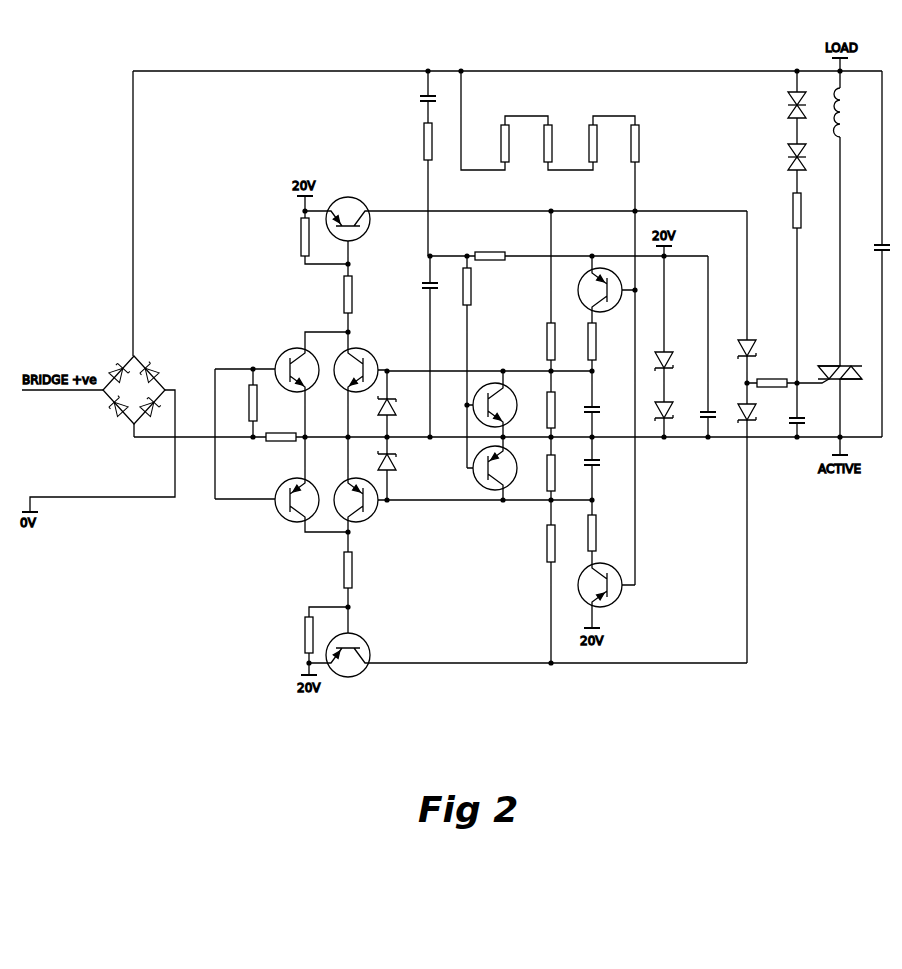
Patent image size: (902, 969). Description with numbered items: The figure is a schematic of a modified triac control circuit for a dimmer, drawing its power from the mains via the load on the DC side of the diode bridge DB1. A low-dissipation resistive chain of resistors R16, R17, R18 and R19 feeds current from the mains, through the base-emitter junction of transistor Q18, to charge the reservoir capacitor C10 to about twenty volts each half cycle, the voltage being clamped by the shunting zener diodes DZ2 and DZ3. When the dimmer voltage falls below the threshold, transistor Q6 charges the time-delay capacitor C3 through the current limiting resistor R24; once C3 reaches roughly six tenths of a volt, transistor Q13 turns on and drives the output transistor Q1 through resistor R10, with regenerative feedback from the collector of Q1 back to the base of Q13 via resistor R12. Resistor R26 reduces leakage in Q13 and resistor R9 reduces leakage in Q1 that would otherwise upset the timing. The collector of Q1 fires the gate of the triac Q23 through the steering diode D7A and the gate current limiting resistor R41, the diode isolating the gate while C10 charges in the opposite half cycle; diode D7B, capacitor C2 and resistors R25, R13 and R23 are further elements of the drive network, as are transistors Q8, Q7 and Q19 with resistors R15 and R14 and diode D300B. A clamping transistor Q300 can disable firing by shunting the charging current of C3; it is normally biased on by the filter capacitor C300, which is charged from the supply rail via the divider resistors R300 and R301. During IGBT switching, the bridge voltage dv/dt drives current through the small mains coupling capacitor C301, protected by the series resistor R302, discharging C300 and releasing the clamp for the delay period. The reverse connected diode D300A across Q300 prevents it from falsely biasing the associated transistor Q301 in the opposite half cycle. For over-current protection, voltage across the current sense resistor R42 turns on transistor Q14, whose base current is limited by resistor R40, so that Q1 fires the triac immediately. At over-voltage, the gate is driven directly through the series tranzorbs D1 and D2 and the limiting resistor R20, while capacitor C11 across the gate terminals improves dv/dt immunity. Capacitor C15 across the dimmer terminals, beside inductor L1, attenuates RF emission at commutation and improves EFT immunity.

The bridge rectifier DB1 is at (146, 390).
The resistor R40 is at (237, 403).
The current sense resistor R42 is at (281, 421).
The transistor Q14 is at (292, 363).
The transistor Q13 is at (360, 363).
The transistor Q8 is at (297, 490).
The transistor Q7 is at (356, 490).
The diode D300B is at (405, 404).
The reverse connected diode D300A is at (406, 468).
The current limiting resistor R10 is at (334, 294).
The output transistor Q1 is at (354, 221).
The resistor R9 is at (290, 237).
The mains coupling capacitor C301 is at (412, 98).
The series resistor element R302 is at (412, 141).
The resistor R19 is at (517, 143).
The resistor R18 is at (560, 143).
The resistor R16 is at (605, 143).
The resistor R17 is at (647, 143).
The filter capacitor C300 is at (418, 283).
The resistive divider element R300 is at (492, 242).
The resistive divider element R301 is at (483, 286).
The clamping transistor Q300 is at (506, 401).
The associated transistor Q301 is at (506, 474).
The transistor Q6 is at (592, 287).
The resistor R12 is at (564, 342).
The current limiting resistor R24 is at (609, 342).
The resistor R26 is at (568, 410).
The time-delay capacitor C3 is at (604, 411).
The resistor 100K R25 is at (568, 473).
The capacitor 10n C2 is at (604, 465).
The resistor 10K R13 is at (539, 543).
The resistor 330K R23 is at (609, 533).
The transistor Q18 is at (592, 581).
The zener diode DZ2 is at (675, 363).
The zener diode DZ3 is at (675, 413).
The reservoir capacitor C10 is at (721, 415).
The steering diode D7A is at (758, 343).
The diode D7B is at (757, 421).
The gate current limiting resistor R41 is at (775, 368).
The tranzorb D1 is at (780, 106).
The tranzorb D2 is at (780, 158).
The current limiting resistor R20 is at (781, 210).
The capacitor C11 is at (811, 421).
The inductor 6uH L1 is at (854, 112).
The triac Q23 is at (844, 383).
The capacitor C15 is at (868, 244).
The resistor 22K R15 is at (361, 570).
The resistor 100K R14 is at (292, 635).
The transistor Q19 is at (354, 648).